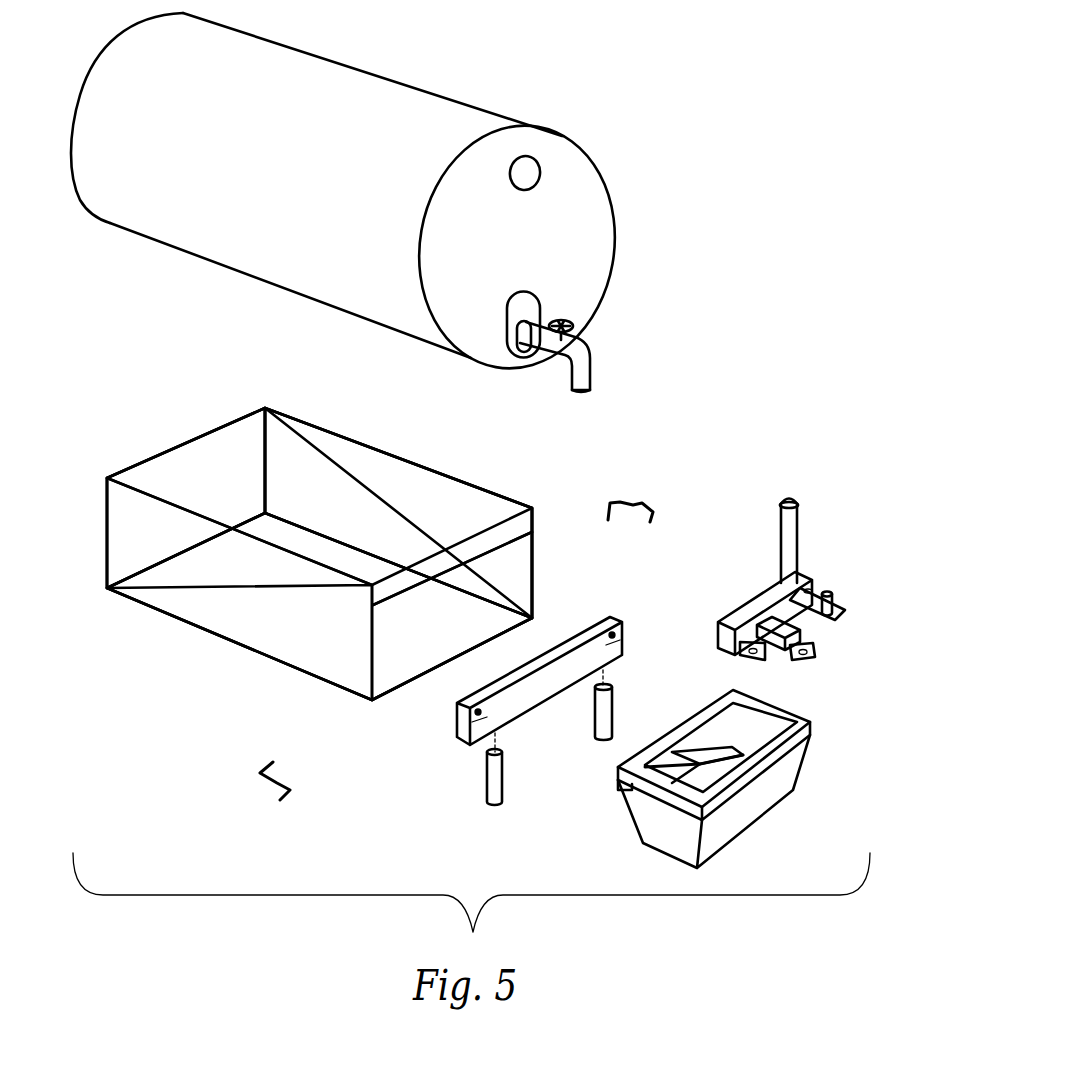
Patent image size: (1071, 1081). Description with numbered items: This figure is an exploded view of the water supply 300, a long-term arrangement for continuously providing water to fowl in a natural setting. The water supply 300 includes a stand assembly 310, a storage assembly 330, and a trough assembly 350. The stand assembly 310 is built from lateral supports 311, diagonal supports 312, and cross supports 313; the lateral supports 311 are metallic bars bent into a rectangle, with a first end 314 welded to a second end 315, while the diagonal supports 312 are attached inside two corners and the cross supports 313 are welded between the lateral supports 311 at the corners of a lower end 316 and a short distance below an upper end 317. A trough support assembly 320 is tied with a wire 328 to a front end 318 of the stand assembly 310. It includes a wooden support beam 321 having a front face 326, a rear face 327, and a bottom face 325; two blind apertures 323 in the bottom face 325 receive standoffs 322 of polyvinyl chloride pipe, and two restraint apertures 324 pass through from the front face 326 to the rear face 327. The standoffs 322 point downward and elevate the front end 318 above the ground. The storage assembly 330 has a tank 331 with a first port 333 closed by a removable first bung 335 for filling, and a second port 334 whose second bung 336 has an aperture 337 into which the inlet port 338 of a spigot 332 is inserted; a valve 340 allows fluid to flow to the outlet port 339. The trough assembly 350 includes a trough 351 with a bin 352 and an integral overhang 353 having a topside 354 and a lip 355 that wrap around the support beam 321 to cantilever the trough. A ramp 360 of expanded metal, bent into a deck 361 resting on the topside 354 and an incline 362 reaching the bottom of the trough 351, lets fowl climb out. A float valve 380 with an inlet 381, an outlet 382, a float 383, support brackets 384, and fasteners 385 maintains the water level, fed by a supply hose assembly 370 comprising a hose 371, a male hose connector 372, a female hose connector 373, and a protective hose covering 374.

The water supply 300 is at (697, 100).
The stand assembly 310 is at (277, 672).
The lateral supports 311 is at (390, 458).
The diagonal supports 312 is at (285, 453).
The cross supports 313 is at (195, 455).
The first end 314 is at (535, 560).
The second end 315 is at (448, 633).
The lower end 316 is at (243, 650).
The upper end 317 is at (341, 562).
The front end 318 is at (398, 708).
The trough support assembly 320 is at (547, 709).
The support beam 321 is at (475, 740).
The standoffs 322 is at (590, 705).
The blind apertures 323 is at (605, 665).
The restraint apertures 324 is at (614, 632).
The bottom face 325 is at (528, 703).
The front face 326 is at (625, 640).
The rear face 327 is at (570, 648).
The wire 328 is at (612, 497).
The storage assembly 330 is at (362, 211).
The tank 331 is at (265, 57).
The spigot 332 is at (590, 345).
The first port 333 is at (548, 168).
The second port 334 is at (523, 300).
The first bung 335 is at (524, 178).
The second bung 336 is at (542, 307).
The aperture 337 is at (510, 366).
The inlet port 338 is at (525, 348).
The outlet port 339 is at (590, 372).
The valve 340 is at (570, 320).
The trough assembly 350 is at (703, 642).
The trough 351 is at (760, 800).
The bin 352 is at (725, 722).
The overhang 353 is at (630, 790).
The topside 354 is at (635, 757).
The lip 355 is at (622, 775).
The ramp 360 is at (701, 776).
The deck 361 is at (662, 770).
The incline 362 is at (700, 755).
The supply hose assembly 370 is at (767, 513).
The hose 371 is at (795, 548).
The male hose connector 372 is at (793, 580).
The female hose connector 373 is at (788, 496).
The hose covering 374 is at (776, 525).
The float valve 380 is at (781, 625).
The inlet 381 is at (745, 605).
The outlet 382 is at (772, 645).
The float 383 is at (748, 660).
The support brackets 384 is at (780, 600).
The fasteners 385 is at (810, 650).